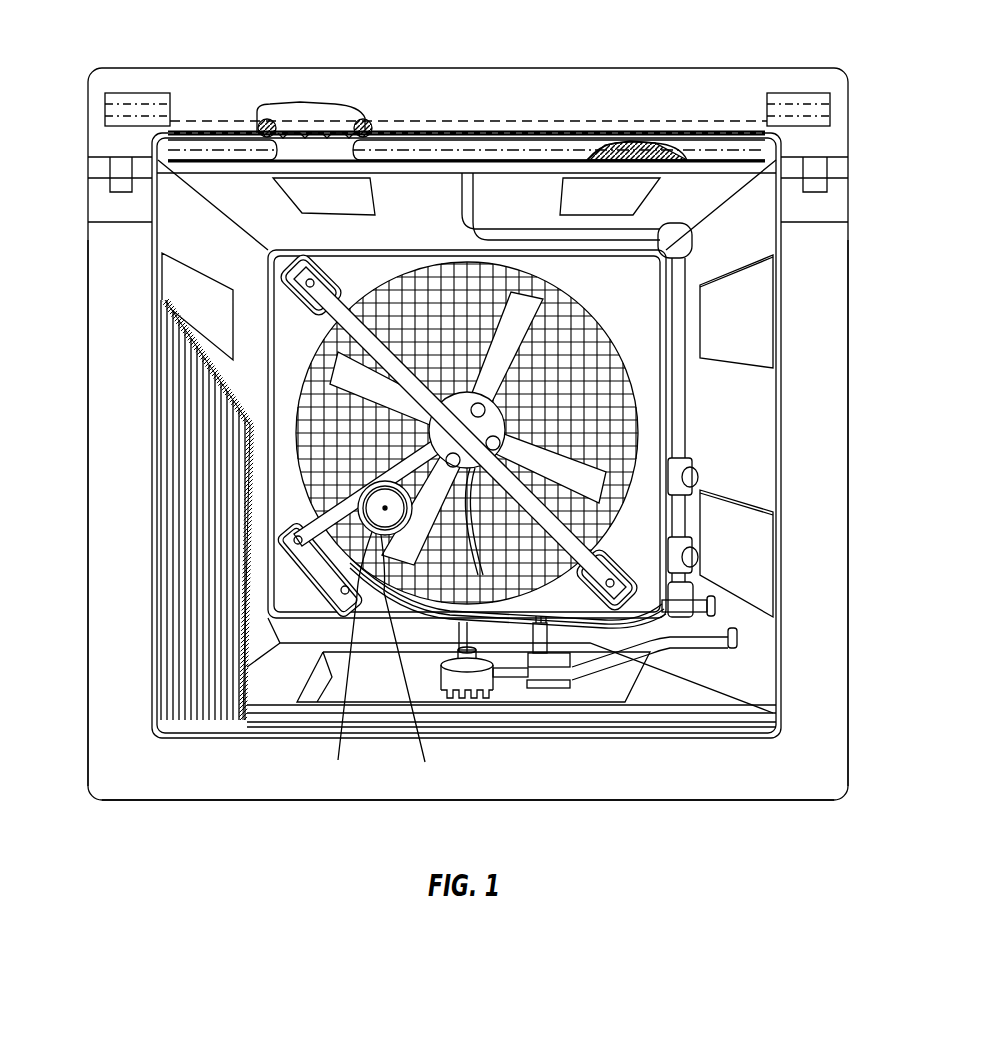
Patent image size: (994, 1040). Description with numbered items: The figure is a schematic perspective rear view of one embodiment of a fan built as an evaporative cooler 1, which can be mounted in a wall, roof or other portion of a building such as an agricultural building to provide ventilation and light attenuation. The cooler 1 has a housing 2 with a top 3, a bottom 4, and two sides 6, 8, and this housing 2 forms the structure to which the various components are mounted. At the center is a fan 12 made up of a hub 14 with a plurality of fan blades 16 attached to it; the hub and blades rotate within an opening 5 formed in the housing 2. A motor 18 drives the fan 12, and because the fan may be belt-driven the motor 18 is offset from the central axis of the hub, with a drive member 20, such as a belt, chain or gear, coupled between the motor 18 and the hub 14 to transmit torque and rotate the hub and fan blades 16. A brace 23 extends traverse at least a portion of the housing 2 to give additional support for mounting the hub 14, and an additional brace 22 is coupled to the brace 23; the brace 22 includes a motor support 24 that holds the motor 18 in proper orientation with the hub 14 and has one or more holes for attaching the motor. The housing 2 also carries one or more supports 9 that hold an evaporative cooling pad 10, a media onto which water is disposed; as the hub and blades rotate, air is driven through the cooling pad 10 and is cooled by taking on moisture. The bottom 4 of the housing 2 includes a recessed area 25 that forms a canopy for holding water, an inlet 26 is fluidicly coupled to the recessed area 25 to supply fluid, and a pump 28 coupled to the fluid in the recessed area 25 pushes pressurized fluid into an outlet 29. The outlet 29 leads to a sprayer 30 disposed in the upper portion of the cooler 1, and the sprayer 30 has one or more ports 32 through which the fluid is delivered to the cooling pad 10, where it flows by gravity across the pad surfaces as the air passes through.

The cooler 1 is at (594, 48).
The housing 2 is at (157, 75).
The top 3 is at (706, 68).
The bottom 4 is at (163, 787).
The opening 5 is at (592, 428).
The side 6 is at (837, 625).
The side 8 is at (93, 623).
The support 9 is at (773, 533).
The evaporative cooling pad 10 is at (172, 382).
The fan 12 is at (527, 405).
The hub 14 is at (467, 390).
The fan blades 16 is at (533, 332).
The motor 18 is at (336, 655).
The drive member 20 is at (355, 442).
The brace 22 is at (425, 762).
The brace 23 is at (459, 432).
The motor support 24 is at (367, 522).
The recessed area 25 is at (605, 690).
The inlet 26 is at (683, 650).
The pump 28 is at (497, 700).
The outlet 29 is at (560, 697).
The sprayer 30 is at (288, 133).
The ports 32 is at (347, 133).